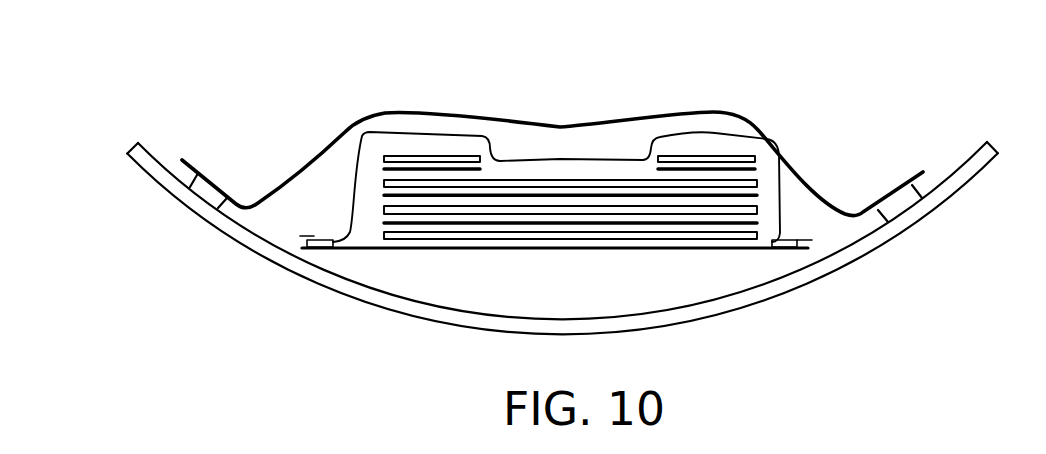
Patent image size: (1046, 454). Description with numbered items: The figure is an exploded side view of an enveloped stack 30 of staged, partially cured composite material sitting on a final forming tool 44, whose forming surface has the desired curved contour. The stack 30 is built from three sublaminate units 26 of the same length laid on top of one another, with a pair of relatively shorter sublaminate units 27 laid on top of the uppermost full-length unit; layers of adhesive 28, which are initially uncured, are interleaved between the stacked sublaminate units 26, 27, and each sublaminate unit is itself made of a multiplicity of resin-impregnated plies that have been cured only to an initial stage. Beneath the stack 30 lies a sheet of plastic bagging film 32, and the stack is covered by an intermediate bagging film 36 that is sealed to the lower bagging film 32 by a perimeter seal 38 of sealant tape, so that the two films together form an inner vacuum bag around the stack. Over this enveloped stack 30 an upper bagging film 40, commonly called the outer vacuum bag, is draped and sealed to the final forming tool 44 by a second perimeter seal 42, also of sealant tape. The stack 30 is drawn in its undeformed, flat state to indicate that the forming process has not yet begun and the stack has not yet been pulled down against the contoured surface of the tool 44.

The sublaminate unit 26 is at (758, 184).
The sublaminate unit 27 is at (402, 155).
The adhesive 28 is at (385, 195).
The stack 30 is at (553, 143).
The bagging film 32 is at (448, 250).
The intermediate bagging film 36 is at (433, 135).
The perimeter seal 38 is at (300, 242).
The upper bagging film 40 is at (635, 122).
The perimeter seal 42 is at (192, 182).
The final forming tool 44 is at (768, 300).